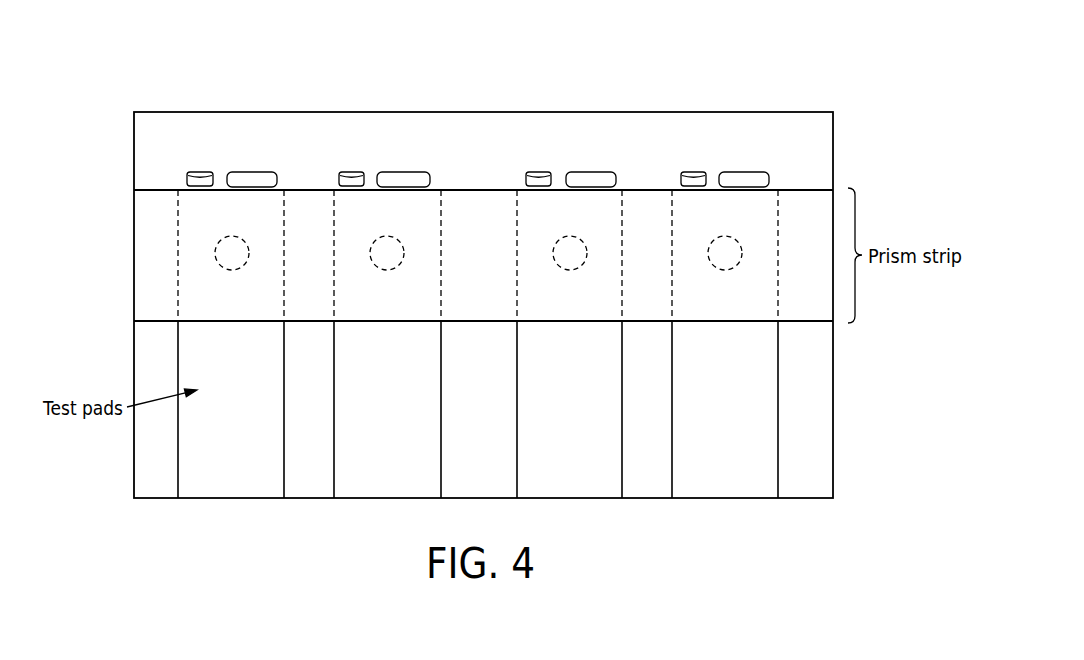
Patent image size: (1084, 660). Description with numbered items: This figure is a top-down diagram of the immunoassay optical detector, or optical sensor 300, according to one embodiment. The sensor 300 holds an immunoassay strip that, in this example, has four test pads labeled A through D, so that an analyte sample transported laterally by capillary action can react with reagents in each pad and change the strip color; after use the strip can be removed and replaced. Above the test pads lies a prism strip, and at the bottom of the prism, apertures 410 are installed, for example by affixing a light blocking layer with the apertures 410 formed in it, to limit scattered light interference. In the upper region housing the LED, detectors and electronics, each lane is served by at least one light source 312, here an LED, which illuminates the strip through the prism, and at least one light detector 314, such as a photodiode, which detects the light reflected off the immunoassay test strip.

The optical sensor 300 is at (216, 96).
The apertures 410 is at (480, 52).
The light source 312 is at (702, 162).
The light detector 314 is at (762, 163).